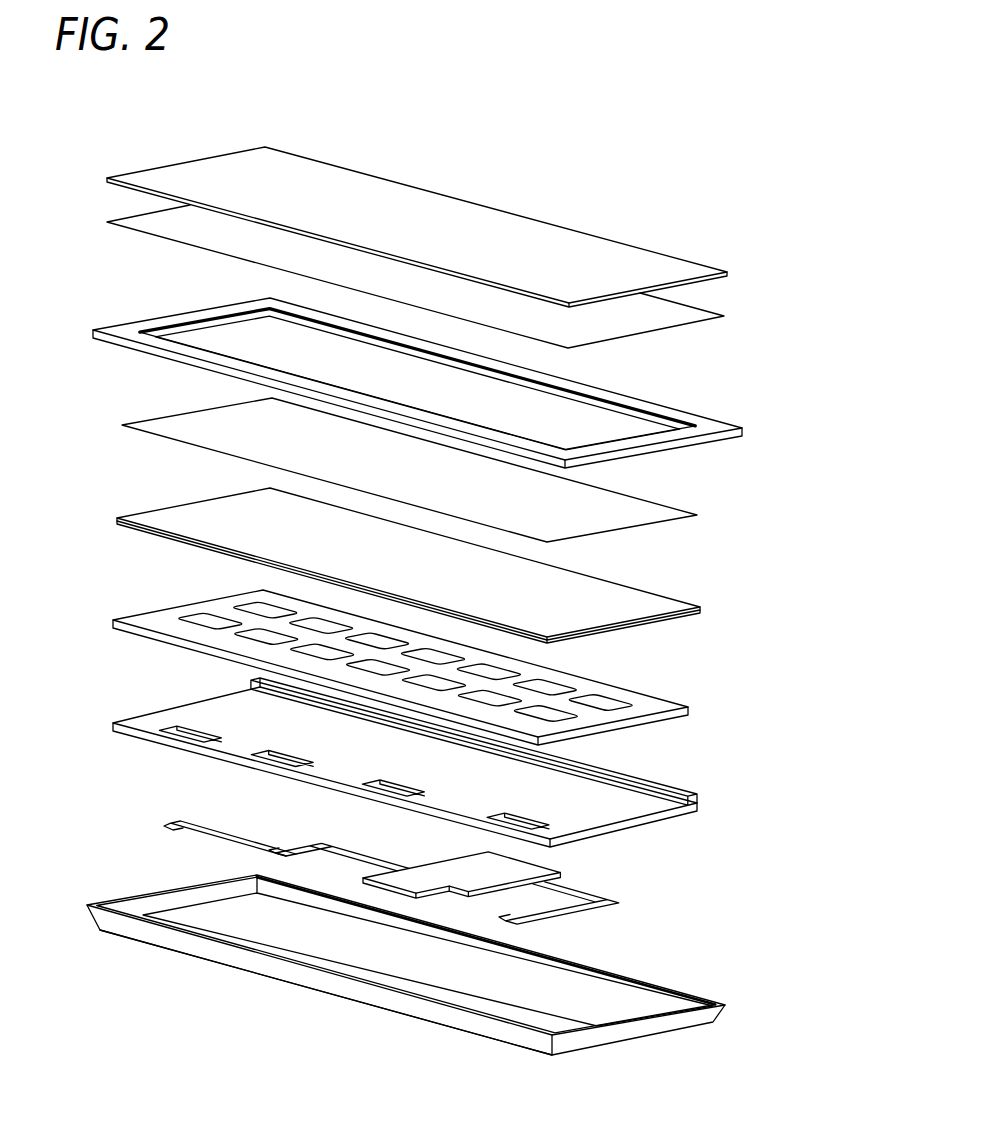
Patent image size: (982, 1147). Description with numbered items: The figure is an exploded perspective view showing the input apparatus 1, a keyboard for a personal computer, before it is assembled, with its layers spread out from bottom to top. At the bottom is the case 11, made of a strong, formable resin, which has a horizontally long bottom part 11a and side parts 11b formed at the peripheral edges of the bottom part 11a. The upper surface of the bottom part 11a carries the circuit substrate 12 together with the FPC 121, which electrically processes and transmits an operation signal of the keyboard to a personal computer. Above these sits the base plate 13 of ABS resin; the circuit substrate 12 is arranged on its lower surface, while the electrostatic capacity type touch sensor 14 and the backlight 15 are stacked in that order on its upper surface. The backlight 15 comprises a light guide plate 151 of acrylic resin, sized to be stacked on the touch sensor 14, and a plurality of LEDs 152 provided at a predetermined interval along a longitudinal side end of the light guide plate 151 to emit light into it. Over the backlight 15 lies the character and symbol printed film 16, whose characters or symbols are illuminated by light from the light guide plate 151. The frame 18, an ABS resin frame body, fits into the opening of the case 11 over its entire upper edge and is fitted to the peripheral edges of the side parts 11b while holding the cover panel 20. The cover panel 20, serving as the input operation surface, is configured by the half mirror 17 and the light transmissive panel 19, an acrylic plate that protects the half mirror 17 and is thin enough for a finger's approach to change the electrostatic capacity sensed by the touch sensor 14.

The input apparatus 1 is at (566, 196).
The case 11 is at (590, 1052).
The bottom part 11a is at (382, 972).
The side parts 11b is at (260, 965).
The circuit substrate 12 is at (556, 874).
The FPC (Flexible Printed Circuit) 121 is at (214, 822).
The base plate 13 is at (688, 822).
The electrostatic capacity type touch sensor 14 is at (688, 708).
The backlight 15 is at (777, 592).
The light guide plate 151 is at (672, 617).
The LEDs 152 is at (702, 608).
The character and symbol printed film 16 is at (662, 505).
The half mirror 17 is at (712, 311).
The frame 18 is at (686, 412).
The light transmissive panel 19 is at (664, 249).
The cover panel 20 is at (777, 205).